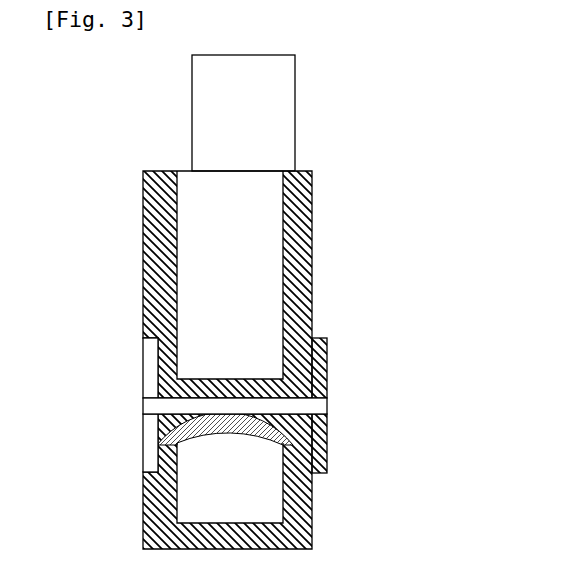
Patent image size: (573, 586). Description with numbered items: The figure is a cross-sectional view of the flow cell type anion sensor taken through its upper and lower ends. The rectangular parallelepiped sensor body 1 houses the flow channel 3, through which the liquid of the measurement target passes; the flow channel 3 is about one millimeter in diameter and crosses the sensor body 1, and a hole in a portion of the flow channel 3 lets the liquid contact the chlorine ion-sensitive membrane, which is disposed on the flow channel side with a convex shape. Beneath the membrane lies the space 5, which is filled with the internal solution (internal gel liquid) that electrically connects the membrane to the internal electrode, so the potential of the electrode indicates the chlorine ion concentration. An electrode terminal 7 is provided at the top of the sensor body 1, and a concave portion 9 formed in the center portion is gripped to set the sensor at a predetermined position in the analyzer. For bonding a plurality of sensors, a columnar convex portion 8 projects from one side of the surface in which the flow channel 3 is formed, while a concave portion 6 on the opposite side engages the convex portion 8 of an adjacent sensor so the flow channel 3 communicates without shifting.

The sensor body 1 is at (162, 230).
The flow channel 3 is at (168, 406).
The space 5 is at (242, 494).
The concave portion 6 is at (147, 380).
The electrode terminal 7 is at (253, 145).
The convex portion 8 is at (313, 345).
The concave portion 9 is at (198, 300).